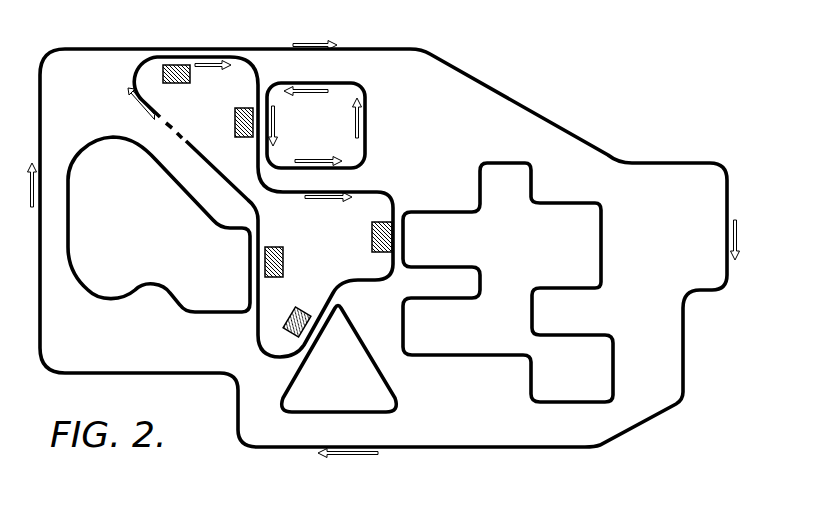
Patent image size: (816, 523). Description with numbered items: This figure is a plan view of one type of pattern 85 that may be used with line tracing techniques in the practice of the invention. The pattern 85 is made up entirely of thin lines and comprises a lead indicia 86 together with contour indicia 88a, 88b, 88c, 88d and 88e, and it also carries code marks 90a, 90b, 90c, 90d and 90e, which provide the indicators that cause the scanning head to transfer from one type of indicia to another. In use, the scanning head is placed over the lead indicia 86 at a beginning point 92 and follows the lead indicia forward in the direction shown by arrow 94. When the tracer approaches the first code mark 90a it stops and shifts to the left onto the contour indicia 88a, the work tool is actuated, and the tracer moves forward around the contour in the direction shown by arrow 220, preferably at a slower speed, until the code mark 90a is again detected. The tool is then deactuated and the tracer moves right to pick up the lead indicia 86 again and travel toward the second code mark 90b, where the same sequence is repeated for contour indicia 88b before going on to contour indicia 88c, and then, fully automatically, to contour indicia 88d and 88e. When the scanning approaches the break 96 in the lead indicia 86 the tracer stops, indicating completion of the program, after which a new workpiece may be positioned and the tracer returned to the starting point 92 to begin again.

The pattern 85 is at (97, 30).
The lead indicia 86 is at (136, 72).
The contour indicia 88a is at (272, 34).
The contour indicia 88b is at (366, 119).
The contour indicia 88c is at (463, 211).
The contour indicia 88d is at (381, 373).
The contour indicia 88e is at (190, 202).
The code mark 90a is at (191, 81).
The code mark 90b is at (238, 128).
The code mark 90c is at (371, 237).
The code mark 90d is at (299, 309).
The code mark 90e is at (284, 261).
The beginning point 92 is at (168, 114).
The arrow 94 is at (135, 101).
The break 96 is at (178, 134).
The arrow 220 is at (298, 44).